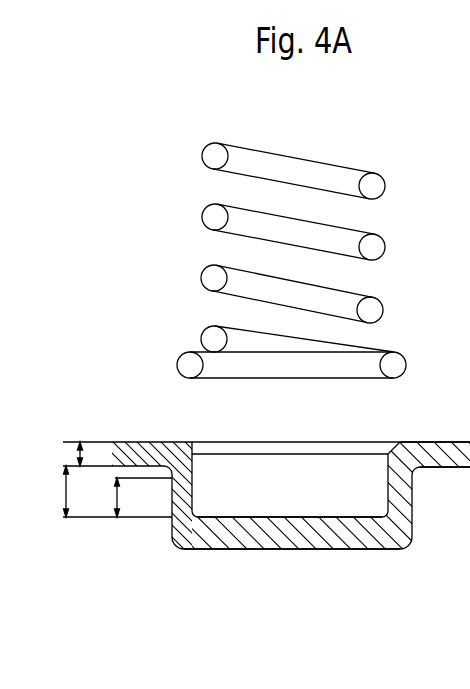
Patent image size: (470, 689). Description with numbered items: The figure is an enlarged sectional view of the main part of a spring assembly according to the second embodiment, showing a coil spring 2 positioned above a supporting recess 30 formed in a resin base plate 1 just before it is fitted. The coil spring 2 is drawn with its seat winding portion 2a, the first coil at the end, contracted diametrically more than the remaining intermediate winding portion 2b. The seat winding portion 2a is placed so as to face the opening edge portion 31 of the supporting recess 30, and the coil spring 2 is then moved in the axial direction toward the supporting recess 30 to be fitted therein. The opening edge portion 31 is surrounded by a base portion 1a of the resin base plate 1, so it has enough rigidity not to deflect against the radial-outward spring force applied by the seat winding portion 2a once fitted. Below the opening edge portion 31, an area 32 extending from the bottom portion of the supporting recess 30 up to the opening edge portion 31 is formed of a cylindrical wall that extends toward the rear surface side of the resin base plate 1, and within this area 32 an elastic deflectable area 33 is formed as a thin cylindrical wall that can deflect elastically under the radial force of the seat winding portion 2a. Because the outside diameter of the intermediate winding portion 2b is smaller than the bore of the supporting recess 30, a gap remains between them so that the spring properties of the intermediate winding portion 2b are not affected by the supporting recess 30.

The resin base plate 1 is at (235, 494).
The base portion 1a is at (438, 442).
The coil spring 2 is at (262, 246).
The seat winding portion 2a is at (177, 365).
The intermediate winding portion 2b is at (200, 277).
The supporting recess 30 is at (291, 549).
The opening edge portion 31 is at (63, 454).
The area 32 is at (106, 491).
The elastic deflectable area 33 is at (132, 497).